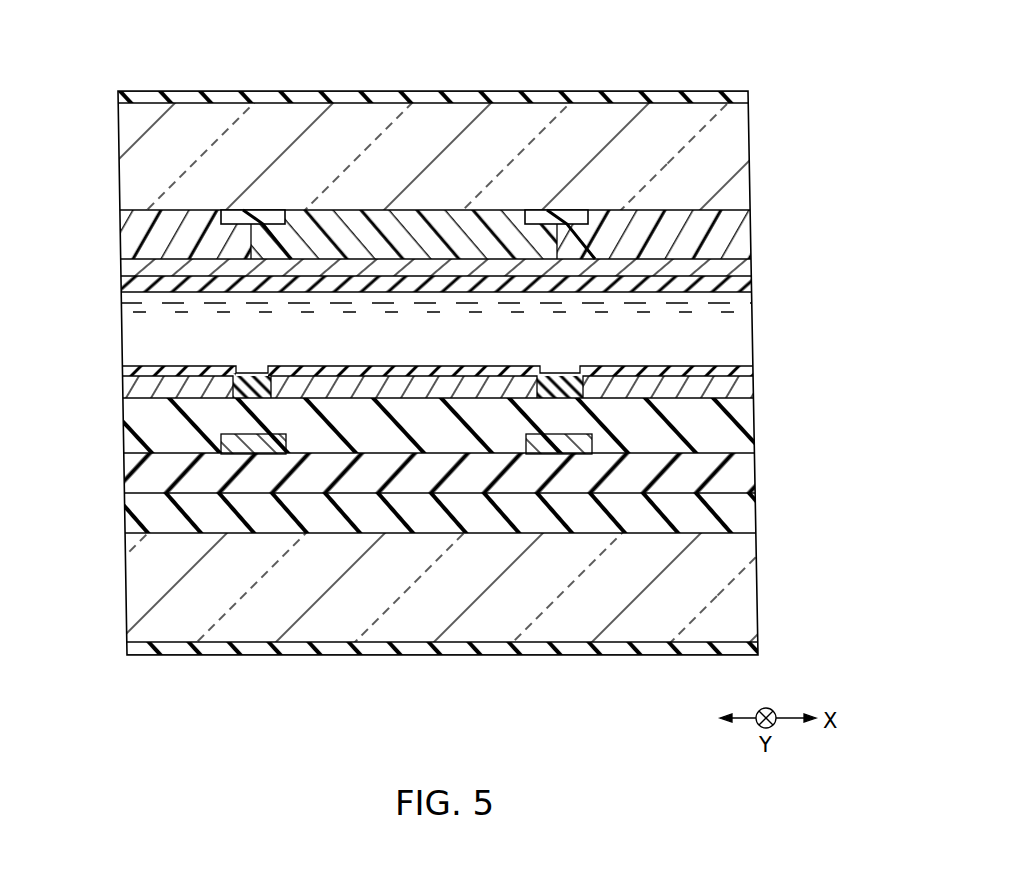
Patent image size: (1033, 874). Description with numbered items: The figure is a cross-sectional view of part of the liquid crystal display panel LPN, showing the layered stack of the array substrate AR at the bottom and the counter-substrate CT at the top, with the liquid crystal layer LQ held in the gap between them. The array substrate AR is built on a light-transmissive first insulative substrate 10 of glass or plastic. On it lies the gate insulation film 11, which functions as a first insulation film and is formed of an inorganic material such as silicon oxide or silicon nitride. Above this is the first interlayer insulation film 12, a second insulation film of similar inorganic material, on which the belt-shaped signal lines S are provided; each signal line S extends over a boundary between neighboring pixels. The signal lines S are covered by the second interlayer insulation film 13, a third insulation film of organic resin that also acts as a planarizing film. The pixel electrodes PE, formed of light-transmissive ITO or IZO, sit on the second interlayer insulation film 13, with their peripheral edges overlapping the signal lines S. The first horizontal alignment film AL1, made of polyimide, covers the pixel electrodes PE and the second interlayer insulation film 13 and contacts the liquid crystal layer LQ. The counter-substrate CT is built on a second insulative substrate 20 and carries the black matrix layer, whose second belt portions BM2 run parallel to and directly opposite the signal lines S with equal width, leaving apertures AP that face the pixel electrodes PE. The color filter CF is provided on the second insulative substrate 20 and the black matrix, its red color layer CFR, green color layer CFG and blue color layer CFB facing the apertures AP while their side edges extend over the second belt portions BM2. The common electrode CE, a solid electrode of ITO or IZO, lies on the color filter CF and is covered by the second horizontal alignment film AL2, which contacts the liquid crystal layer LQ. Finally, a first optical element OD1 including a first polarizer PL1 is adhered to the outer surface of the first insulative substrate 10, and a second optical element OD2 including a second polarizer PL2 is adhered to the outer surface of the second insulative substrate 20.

The liquid crystal display panel LPN is at (434, 367).
The counter-substrate CT is at (435, 164).
The array substrate AR is at (432, 522).
The second optical element OD2 is at (440, 57).
The second polarizer PL2 is at (433, 91).
The first optical element OD1 is at (440, 682).
The first polarizer PL1 is at (390, 657).
The second insulative substrate 20 is at (743, 160).
The first insulative substrate 10 is at (747, 602).
The color filter CF is at (436, 151).
The blue color layer CFB is at (120, 227).
The red color layer CFR is at (332, 222).
The green color layer CFG is at (743, 238).
The second belt portion BM2 is at (253, 212).
The aperture AP is at (208, 210).
The common electrode CE is at (743, 267).
The second horizontal alignment film AL2 is at (743, 292).
The first horizontal alignment film AL1 is at (748, 370).
The liquid crystal layer LQ is at (740, 328).
The pixel electrode PE is at (346, 388).
The signal line S is at (251, 455).
The second interlayer insulation film 13 is at (750, 428).
The first interlayer insulation film 12 is at (750, 485).
The gate insulation film 11 is at (750, 520).